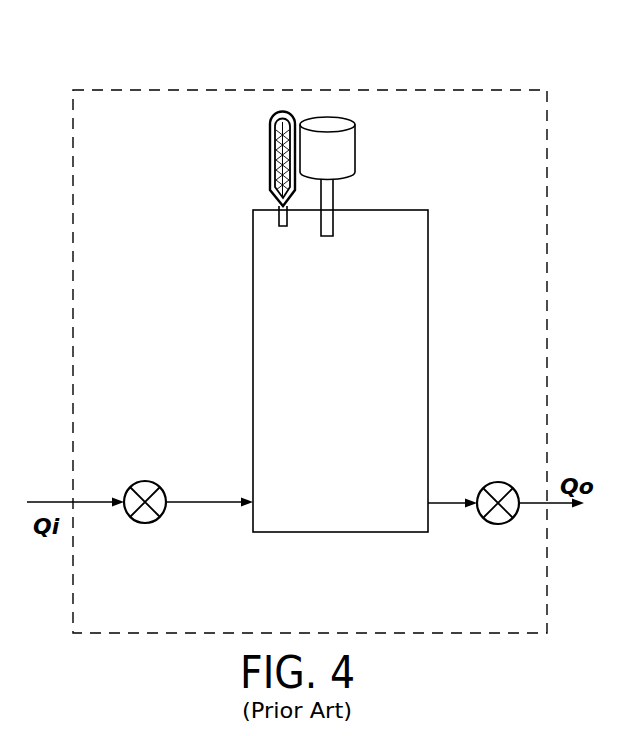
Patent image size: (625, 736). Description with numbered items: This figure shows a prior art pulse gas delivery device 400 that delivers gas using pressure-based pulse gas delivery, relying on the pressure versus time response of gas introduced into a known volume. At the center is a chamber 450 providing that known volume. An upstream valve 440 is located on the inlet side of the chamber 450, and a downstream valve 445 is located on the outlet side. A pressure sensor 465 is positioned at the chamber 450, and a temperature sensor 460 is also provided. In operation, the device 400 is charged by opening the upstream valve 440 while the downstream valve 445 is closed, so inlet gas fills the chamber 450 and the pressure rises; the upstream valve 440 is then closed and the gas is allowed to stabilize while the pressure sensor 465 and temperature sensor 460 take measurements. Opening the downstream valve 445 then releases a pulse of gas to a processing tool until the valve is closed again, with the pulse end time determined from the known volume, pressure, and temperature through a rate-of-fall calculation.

The pulse gas delivery device 400 is at (403, 49).
The upstream valve 440 is at (153, 482).
The downstream valve 445 is at (501, 481).
The chamber 450 is at (363, 404).
The temperature sensor 460 is at (270, 168).
The pressure sensor 465 is at (350, 144).